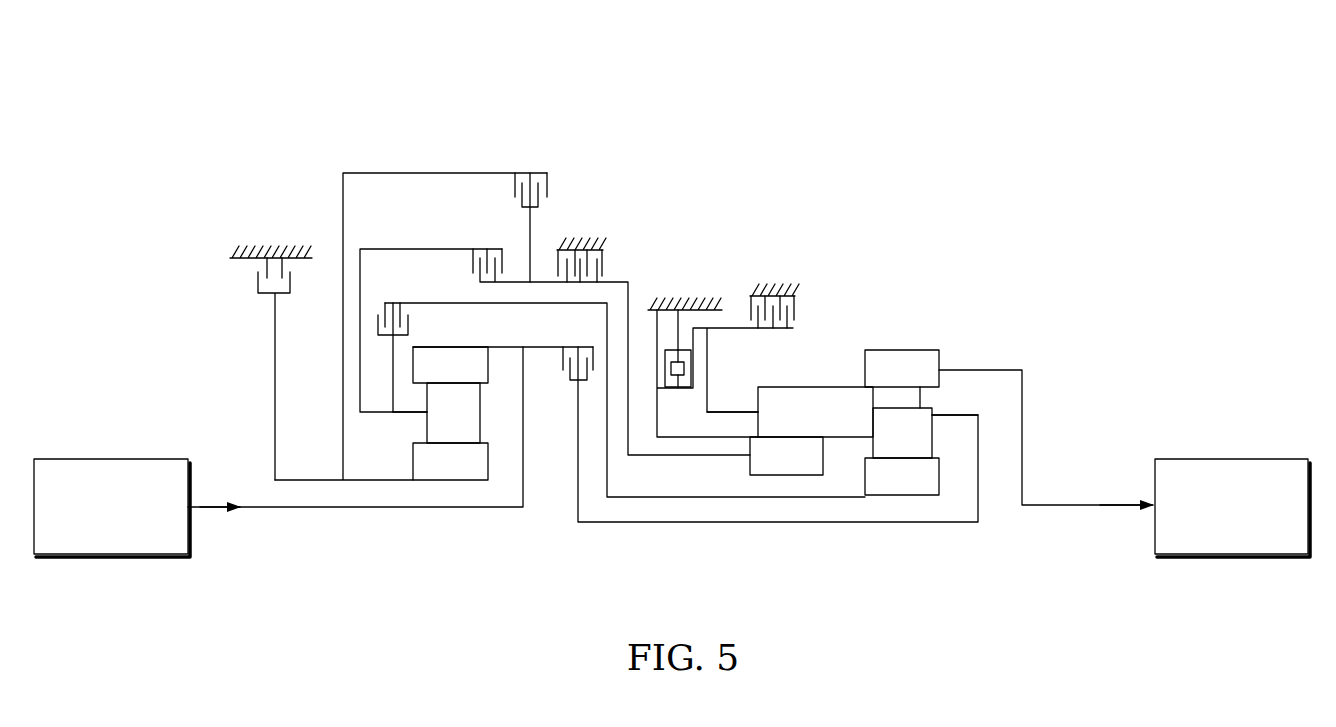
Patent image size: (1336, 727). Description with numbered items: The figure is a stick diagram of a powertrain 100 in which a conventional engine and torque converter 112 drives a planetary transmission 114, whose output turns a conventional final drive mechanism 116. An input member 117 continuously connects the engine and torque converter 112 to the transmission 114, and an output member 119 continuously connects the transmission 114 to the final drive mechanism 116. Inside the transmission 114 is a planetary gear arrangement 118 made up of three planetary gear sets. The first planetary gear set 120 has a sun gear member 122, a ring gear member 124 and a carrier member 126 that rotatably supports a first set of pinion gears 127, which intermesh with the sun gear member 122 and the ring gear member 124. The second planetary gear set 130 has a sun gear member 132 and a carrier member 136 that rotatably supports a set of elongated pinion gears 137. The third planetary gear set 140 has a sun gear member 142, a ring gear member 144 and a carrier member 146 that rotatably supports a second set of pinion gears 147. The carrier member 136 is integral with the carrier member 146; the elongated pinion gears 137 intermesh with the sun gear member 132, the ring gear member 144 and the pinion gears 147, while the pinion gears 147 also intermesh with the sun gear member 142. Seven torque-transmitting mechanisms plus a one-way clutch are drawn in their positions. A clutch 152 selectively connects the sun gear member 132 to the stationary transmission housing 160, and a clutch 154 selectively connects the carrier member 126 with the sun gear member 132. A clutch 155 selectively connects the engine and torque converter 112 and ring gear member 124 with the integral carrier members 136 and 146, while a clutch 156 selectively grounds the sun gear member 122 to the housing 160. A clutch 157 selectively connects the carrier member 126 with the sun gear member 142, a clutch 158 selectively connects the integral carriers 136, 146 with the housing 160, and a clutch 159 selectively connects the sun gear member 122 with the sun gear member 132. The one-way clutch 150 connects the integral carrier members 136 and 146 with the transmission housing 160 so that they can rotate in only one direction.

The hybrid powertrain 100 is at (899, 88).
The engine and torque converter 112 is at (107, 459).
The planetary transmission 114 is at (746, 152).
The final drive mechanism 116 is at (1243, 459).
The input member 117 is at (305, 507).
The planetary gear arrangement 118 is at (949, 150).
The output member 119 is at (1105, 505).
The first planetary gear set 120 is at (442, 465).
The sun gear member 122 is at (450, 461).
The ring gear member 124 is at (450, 365).
The carrier member 126 is at (408, 412).
The first set of pinion gears 127 is at (453, 413).
The second planetary gear set 130 is at (790, 464).
The sun gear member 132 is at (786, 456).
The carrier member 136 is at (725, 410).
The elongated pinion gears 137 is at (815, 412).
The third planetary gear set 140 is at (937, 446).
The sun gear member 142 is at (902, 476).
The ring gear member 144 is at (902, 368).
The carrier member 146 is at (957, 412).
The second set of pinion gears 147 is at (902, 422).
The one-way clutch 150 is at (680, 328).
The clutch 152 is at (622, 262).
The clutch 154 is at (462, 267).
The clutch 155 is at (558, 376).
The clutch 156 is at (246, 276).
The clutch 157 is at (422, 317).
The clutch 158 is at (812, 308).
The clutch 159 is at (556, 178).
The transmission housing 160 is at (237, 248).